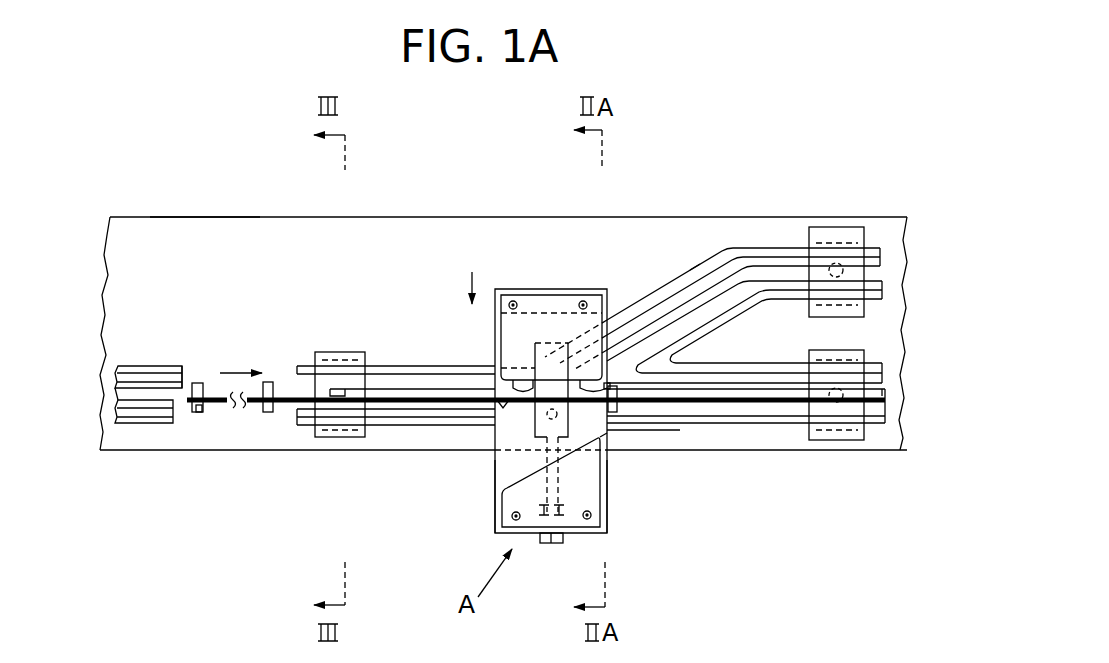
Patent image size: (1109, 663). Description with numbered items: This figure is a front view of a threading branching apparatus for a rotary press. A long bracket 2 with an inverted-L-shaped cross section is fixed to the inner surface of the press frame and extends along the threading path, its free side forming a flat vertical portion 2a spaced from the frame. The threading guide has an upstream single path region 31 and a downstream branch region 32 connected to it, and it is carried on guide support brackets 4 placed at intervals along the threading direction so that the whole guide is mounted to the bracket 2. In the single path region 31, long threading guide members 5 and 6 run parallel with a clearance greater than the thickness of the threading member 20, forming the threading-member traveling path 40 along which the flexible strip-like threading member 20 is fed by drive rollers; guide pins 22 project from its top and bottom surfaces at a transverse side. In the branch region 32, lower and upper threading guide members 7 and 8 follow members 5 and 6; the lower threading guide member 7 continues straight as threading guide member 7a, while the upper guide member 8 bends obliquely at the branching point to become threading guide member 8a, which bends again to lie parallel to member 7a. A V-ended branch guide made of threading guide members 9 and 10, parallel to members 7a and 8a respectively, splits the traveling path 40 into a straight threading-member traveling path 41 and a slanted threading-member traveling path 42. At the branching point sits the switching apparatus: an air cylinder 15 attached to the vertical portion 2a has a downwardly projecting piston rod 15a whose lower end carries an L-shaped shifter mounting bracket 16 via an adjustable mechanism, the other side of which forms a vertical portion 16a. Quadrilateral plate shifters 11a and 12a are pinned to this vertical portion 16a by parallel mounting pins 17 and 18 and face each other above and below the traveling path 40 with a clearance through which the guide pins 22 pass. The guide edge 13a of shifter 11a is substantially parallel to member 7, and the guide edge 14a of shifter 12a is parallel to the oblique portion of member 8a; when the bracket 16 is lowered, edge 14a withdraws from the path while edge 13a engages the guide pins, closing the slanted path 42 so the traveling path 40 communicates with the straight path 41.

The bracket 2 is at (703, 217).
The vertical portion 2a is at (208, 230).
The single path region 31 is at (178, 346).
The threading guide member 6 is at (143, 382).
The threading guide member 5 is at (137, 410).
The threading-member traveling path 40 is at (110, 392).
The guide pin 22 is at (197, 412).
The threading member 20 is at (252, 410).
The upper threading guide member 8 is at (427, 366).
The lower threading guide member 7 is at (408, 425).
The guide support bracket 4 is at (337, 437).
The shifter 11a is at (532, 318).
The mounting pin 17 is at (513, 301).
The air cylinder 15 is at (548, 340).
The guide edge 13a is at (500, 403).
The shifter 12a is at (520, 497).
The mounting pin 18 is at (518, 520).
The vertical portion 16a is at (512, 465).
The shifter mounting bracket 16 is at (607, 513).
The guide edge 14a is at (603, 433).
The piston rod 15a is at (557, 473).
The threading guide member 8a is at (698, 282).
The threading guide member 10 is at (731, 299).
The slanted threading-member traveling path 42 is at (723, 289).
The threading guide member 9 is at (702, 380).
The threading guide member 7a is at (768, 425).
The branch region 32 is at (684, 433).
The straight threading-member traveling path 41 is at (890, 401).